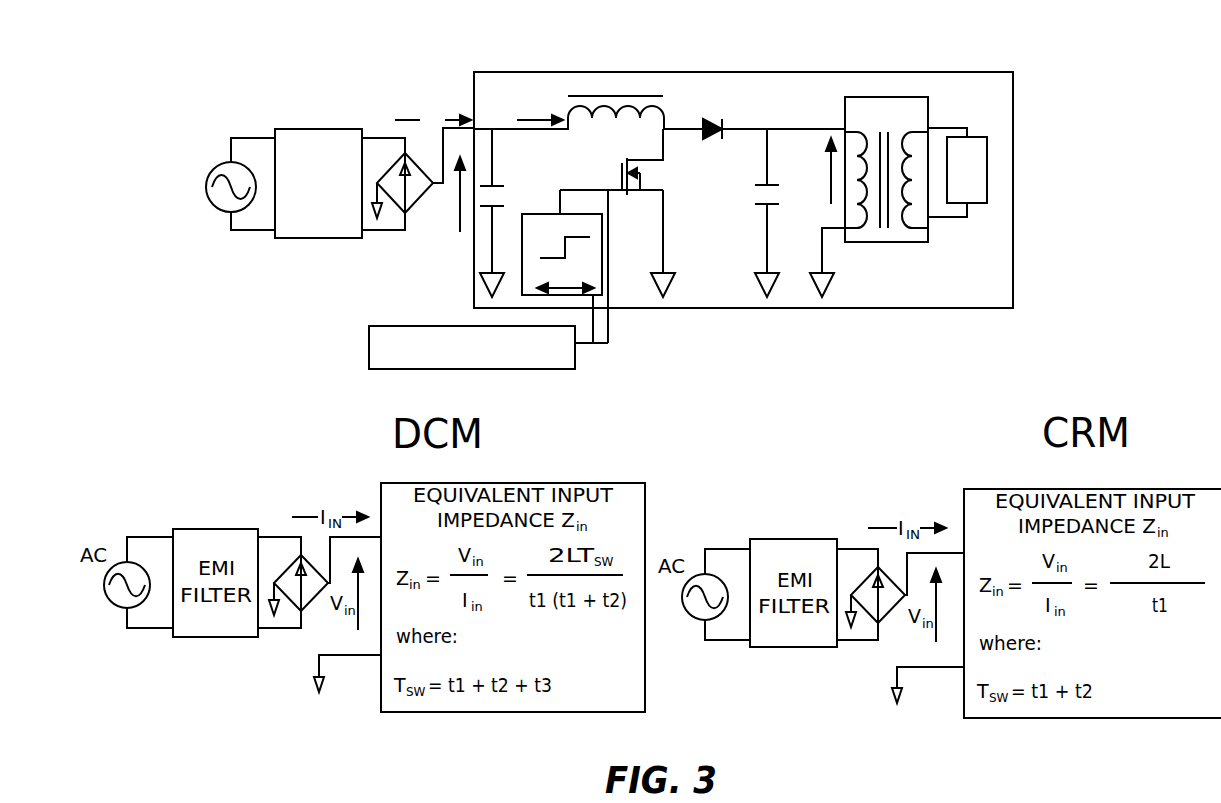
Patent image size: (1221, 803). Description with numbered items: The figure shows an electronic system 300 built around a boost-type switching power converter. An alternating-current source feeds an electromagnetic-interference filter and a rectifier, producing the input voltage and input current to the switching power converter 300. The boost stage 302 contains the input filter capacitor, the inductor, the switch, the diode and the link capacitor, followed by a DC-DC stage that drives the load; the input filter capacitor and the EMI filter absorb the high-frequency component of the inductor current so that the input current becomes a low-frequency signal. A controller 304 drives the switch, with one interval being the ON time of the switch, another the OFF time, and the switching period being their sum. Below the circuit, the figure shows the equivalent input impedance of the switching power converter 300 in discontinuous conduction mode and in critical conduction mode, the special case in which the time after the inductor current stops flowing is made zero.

The electronic system 300 is at (1106, 97).
The boost power factor correction stage 302 is at (790, 72).
The controller 304 is at (563, 357).